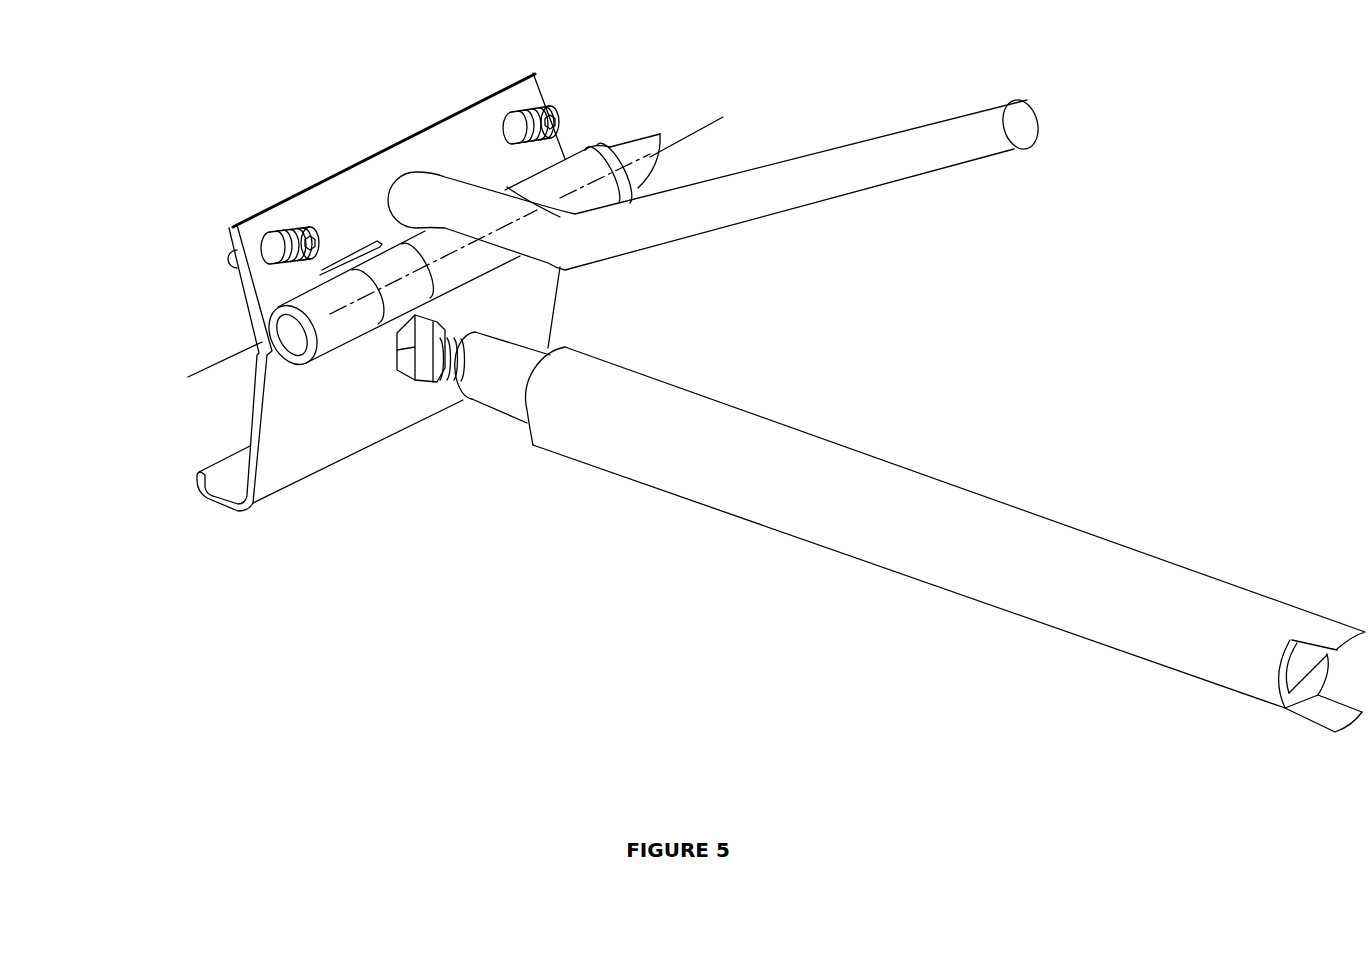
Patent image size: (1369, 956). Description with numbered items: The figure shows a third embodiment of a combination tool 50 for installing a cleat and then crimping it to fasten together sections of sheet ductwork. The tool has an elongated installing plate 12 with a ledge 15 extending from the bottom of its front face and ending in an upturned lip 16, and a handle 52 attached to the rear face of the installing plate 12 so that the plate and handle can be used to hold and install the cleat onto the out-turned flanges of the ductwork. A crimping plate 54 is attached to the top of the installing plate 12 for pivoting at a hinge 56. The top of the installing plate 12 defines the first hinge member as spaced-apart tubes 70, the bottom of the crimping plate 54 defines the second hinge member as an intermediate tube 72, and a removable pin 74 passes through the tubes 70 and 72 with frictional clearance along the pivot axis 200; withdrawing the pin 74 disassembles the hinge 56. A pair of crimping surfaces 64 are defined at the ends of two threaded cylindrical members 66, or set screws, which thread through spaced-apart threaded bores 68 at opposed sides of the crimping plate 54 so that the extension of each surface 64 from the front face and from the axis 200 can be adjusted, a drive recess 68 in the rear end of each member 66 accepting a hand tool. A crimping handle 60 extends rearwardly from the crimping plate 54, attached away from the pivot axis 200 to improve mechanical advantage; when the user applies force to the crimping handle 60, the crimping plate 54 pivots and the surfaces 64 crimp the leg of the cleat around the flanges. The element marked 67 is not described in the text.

The installing plate 12 is at (318, 428).
The ledge 15 is at (228, 486).
The upturned lip 16 is at (197, 473).
The combination tool 50 is at (893, 261).
The handle 52 is at (1147, 640).
The crimping plate 54 is at (355, 177).
The hinge 56 is at (206, 337).
The crimping handle 60 is at (770, 166).
The crimping surface 64 is at (235, 258).
The threaded cylindrical member 66 is at (320, 234).
The threaded hole 67 is at (288, 252).
The threaded bore 68 is at (316, 238).
The tube 70 is at (307, 298).
The intermediate tube 72 is at (393, 303).
The removable pin 74 is at (651, 164).
The pivot axis 200 is at (707, 122).